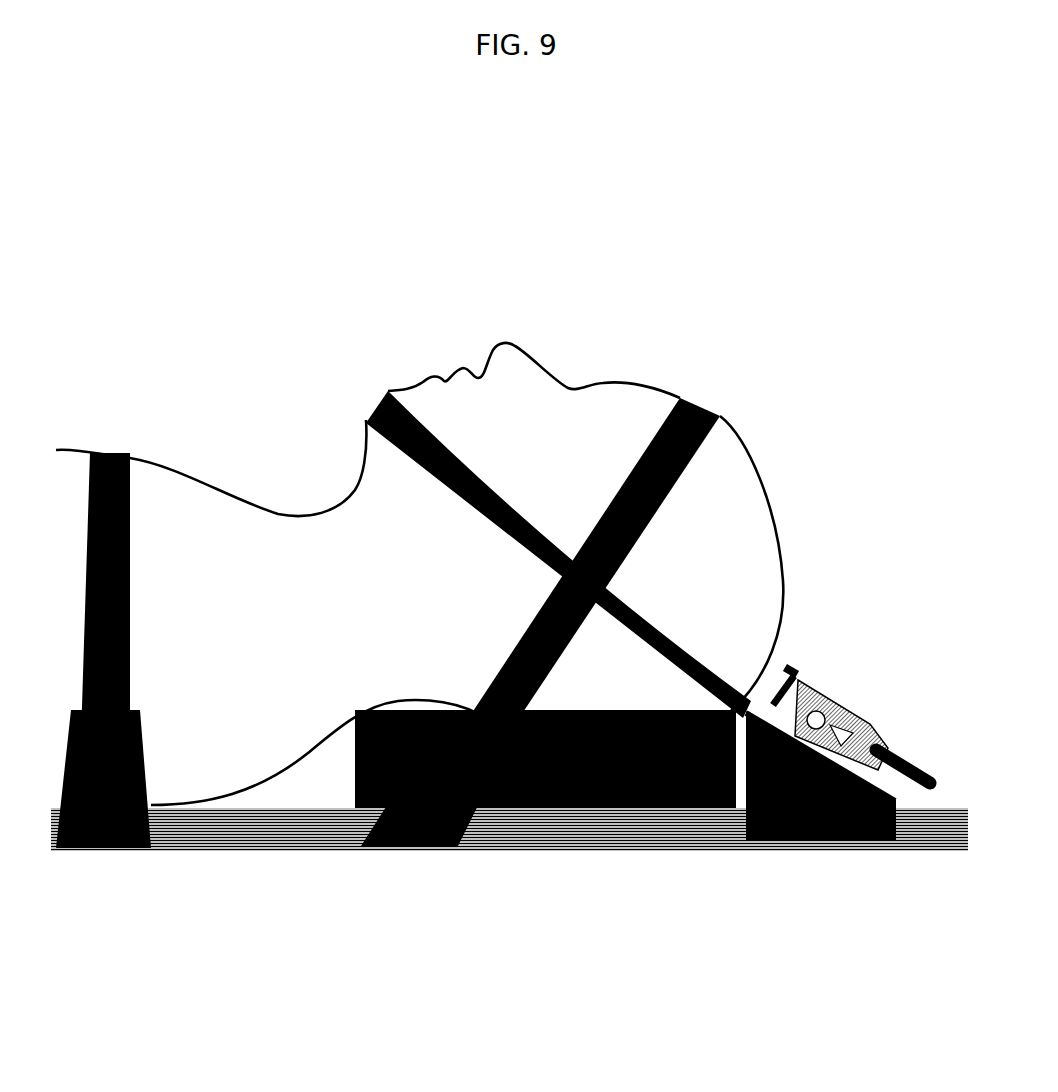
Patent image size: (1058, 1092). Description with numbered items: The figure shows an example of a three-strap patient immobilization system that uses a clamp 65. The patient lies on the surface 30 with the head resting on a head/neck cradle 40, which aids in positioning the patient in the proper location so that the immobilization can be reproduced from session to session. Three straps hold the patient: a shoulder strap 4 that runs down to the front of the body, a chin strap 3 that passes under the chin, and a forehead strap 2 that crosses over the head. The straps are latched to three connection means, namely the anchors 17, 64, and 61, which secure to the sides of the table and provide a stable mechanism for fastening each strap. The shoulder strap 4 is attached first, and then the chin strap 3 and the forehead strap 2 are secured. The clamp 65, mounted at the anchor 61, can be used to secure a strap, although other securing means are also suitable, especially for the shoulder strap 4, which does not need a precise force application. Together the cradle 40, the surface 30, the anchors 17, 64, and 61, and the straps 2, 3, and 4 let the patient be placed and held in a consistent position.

The forehead strap 2 is at (703, 402).
The chin strap 3 is at (362, 390).
The shoulder strap 4 is at (107, 445).
The anchor 17 is at (123, 820).
The surface 30 is at (518, 829).
The head/neck cradle 40 is at (695, 783).
The anchor 61 is at (832, 825).
The anchor 64 is at (412, 840).
The clamp 65 is at (855, 712).